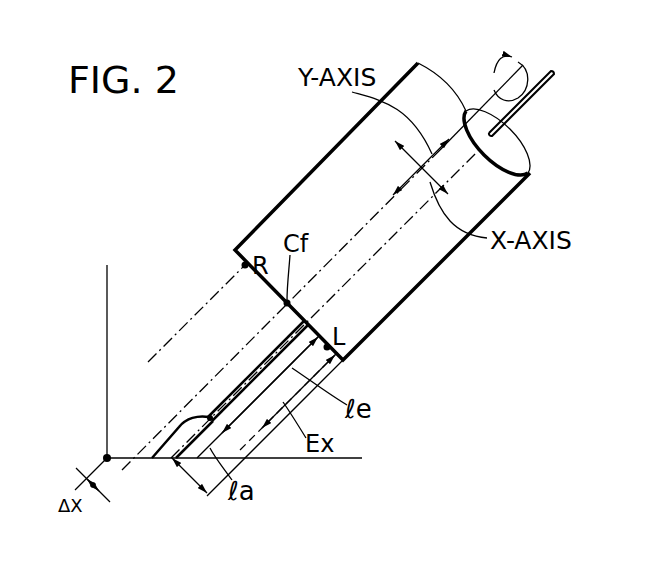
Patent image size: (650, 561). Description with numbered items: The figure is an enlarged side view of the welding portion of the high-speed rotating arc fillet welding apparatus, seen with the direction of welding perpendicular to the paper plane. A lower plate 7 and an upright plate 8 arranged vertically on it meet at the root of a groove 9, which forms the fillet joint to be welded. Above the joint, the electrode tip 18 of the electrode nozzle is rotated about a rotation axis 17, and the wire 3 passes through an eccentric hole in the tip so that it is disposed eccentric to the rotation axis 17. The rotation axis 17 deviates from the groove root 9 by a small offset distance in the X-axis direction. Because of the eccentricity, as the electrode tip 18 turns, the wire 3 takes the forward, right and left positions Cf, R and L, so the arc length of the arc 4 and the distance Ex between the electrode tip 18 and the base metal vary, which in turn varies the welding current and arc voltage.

The wire 3 is at (250, 374).
The arc 4 is at (170, 437).
The lower plate 7 is at (286, 460).
The upright plate 8 is at (107, 350).
The root of a groove 9 is at (105, 456).
The rotation axis 17 is at (492, 98).
The electrode tip 18 is at (382, 211).